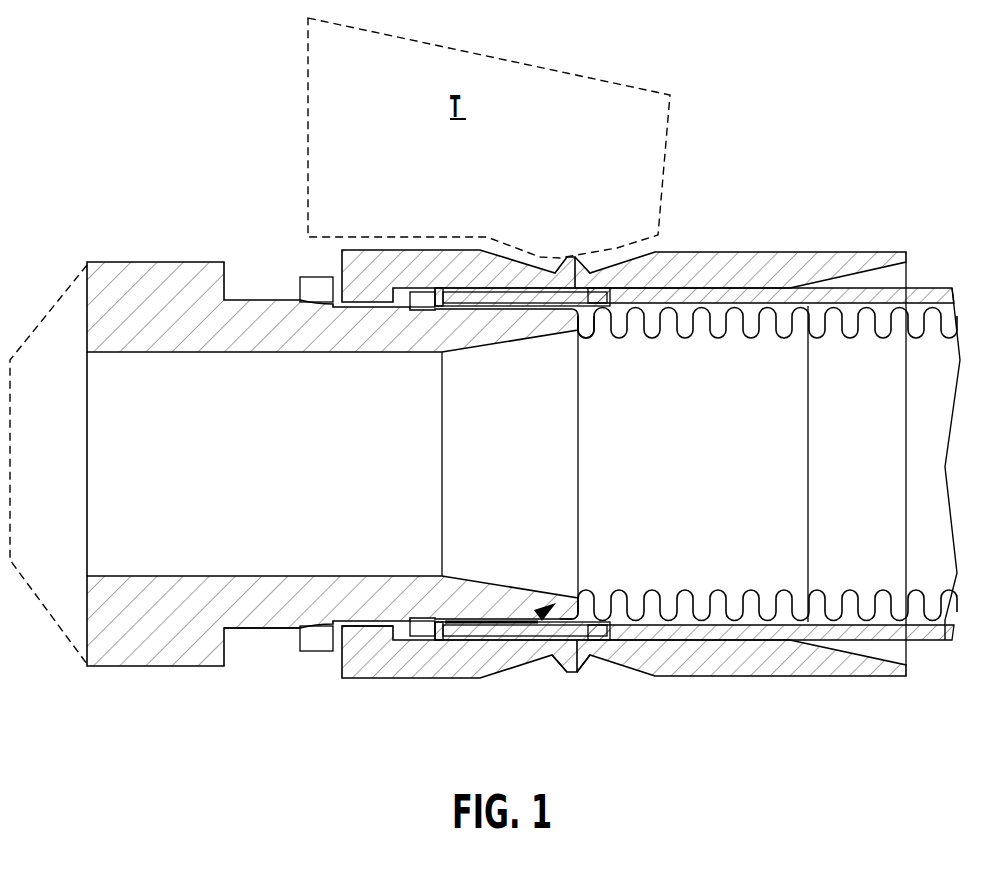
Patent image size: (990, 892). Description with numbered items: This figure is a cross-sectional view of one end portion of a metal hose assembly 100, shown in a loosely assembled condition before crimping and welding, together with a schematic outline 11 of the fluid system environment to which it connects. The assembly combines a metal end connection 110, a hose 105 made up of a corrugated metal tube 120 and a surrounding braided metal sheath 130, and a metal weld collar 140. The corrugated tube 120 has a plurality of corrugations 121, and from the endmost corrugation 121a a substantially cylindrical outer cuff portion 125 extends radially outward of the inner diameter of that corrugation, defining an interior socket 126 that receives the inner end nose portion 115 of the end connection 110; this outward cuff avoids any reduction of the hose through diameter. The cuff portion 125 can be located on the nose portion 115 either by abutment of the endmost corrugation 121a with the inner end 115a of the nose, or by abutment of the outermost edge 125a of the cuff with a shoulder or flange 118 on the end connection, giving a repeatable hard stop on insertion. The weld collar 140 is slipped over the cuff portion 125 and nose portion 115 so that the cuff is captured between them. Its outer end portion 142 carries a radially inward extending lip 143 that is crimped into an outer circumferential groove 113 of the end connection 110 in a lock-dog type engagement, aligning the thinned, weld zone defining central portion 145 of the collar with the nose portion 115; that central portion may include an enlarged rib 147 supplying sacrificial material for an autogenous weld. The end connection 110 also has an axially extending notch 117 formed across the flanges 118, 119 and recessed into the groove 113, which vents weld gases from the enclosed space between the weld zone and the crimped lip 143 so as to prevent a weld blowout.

The vehicle/appliance (dashed environment) 11 is at (50, 307).
The metal hose assembly 100 is at (383, 131).
The hose 105 is at (945, 682).
The metal end connection 110 is at (192, 290).
The outer circumferential groove 113 is at (351, 305).
The inner end nose portion 115 is at (558, 323).
The inner end of the nose portion 115a is at (587, 593).
The axially extending notch 117 is at (408, 305).
The shoulder or flange 118 is at (427, 630).
The flange 119 is at (307, 642).
The corrugated metal tube 120 is at (645, 323).
The corrugations 121 is at (810, 307).
The endmost corrugation 121a is at (577, 330).
The outer cuff portion 125 is at (520, 303).
The outermost edge of the cuff portion 125a is at (449, 303).
The socket 126 is at (537, 620).
The sheath 130 is at (730, 297).
The metal weld collar 140 is at (717, 263).
The outer end portion of the weld collar 142 is at (350, 659).
The radially inward extending lip 143 is at (380, 640).
The weld zone defining central portion 145 is at (550, 657).
The enlarged rib 147 is at (577, 665).